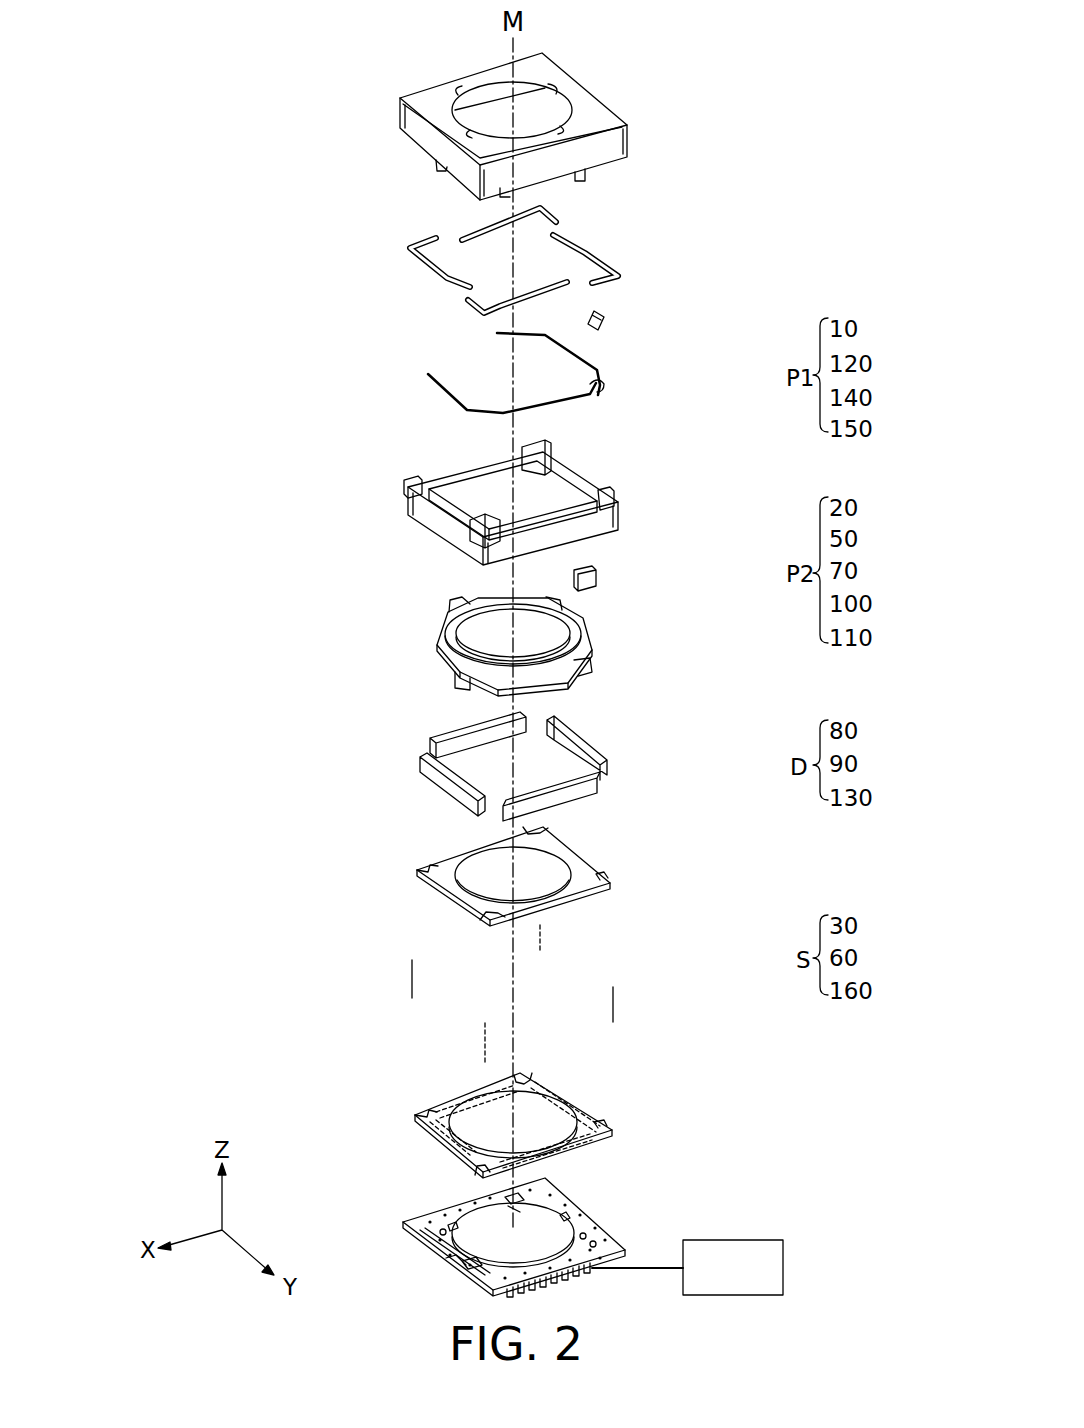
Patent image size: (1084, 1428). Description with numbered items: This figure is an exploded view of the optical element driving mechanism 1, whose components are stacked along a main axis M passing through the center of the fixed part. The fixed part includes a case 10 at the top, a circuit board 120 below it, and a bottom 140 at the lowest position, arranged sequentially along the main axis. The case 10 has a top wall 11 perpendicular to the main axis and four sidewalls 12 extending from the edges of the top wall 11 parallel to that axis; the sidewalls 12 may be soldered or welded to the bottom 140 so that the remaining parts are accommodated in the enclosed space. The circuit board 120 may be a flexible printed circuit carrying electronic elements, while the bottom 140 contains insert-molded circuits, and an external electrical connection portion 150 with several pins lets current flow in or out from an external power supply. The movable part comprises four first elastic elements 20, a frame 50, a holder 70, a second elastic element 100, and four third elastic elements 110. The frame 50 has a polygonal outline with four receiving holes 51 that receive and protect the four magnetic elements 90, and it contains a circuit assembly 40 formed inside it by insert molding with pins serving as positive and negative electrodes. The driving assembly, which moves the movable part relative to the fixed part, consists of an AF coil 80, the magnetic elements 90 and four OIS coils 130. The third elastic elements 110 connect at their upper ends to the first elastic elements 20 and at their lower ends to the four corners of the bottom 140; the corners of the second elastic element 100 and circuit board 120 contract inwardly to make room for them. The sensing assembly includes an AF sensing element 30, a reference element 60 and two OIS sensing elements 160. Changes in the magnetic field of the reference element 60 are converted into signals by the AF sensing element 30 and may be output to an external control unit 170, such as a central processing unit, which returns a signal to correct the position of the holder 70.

The optical element driving mechanism 1 is at (288, 18).
The case 10 is at (544, 126).
The top wall 11 is at (596, 100).
The sidewall 12 is at (401, 122).
The first elastic element 20 is at (605, 263).
The AF sensing element 30 is at (600, 313).
The circuit assembly 40 is at (597, 372).
The frame 50 is at (522, 490).
The receiving hole 51 is at (470, 458).
The reference element 60 is at (592, 572).
The holder 70 is at (543, 645).
The AF coil 80 is at (550, 680).
The magnetic element 90 is at (455, 732).
The second elastic element 100 is at (578, 851).
The third elastic element 110 is at (411, 970).
The circuit board 120 is at (530, 1108).
The OIS coil 130 is at (465, 1087).
The bottom 140 is at (546, 1239).
The external electrical connection portion 150 is at (568, 1282).
The OIS sensing element 160 is at (514, 1190).
The control unit 170 is at (712, 1282).